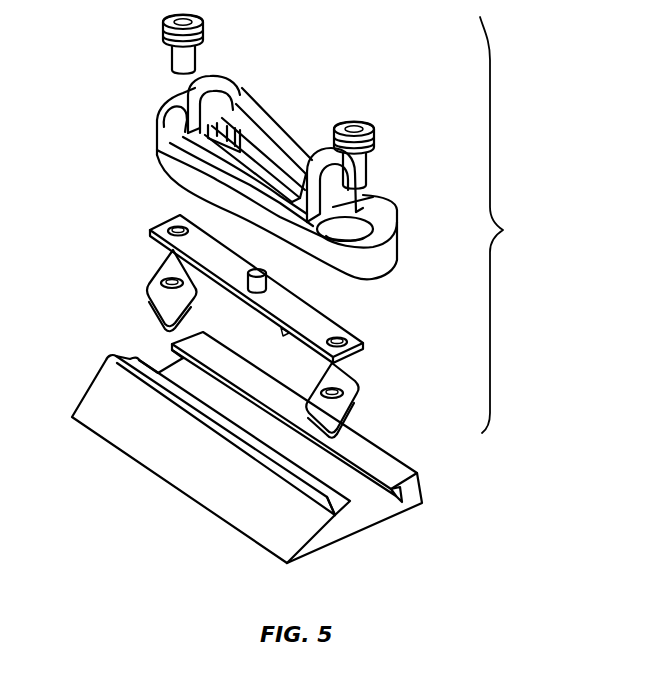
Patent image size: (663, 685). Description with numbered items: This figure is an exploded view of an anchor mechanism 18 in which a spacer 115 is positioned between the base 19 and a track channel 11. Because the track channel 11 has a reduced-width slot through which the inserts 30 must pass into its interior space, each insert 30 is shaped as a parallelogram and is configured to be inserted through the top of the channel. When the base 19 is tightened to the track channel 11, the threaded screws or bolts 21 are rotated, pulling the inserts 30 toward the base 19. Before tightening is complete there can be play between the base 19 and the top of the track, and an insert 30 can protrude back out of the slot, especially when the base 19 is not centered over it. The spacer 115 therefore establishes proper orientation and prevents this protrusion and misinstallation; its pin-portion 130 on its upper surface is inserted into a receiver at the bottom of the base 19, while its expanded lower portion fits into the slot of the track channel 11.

The track channel 11 is at (383, 542).
The anchor mechanism 18 is at (508, 225).
The base 19 is at (277, 178).
The threaded screws or bolts 21 is at (357, 163).
The inserts 30 is at (358, 396).
The spacer 115 is at (325, 331).
The pin-portion 130 is at (256, 289).